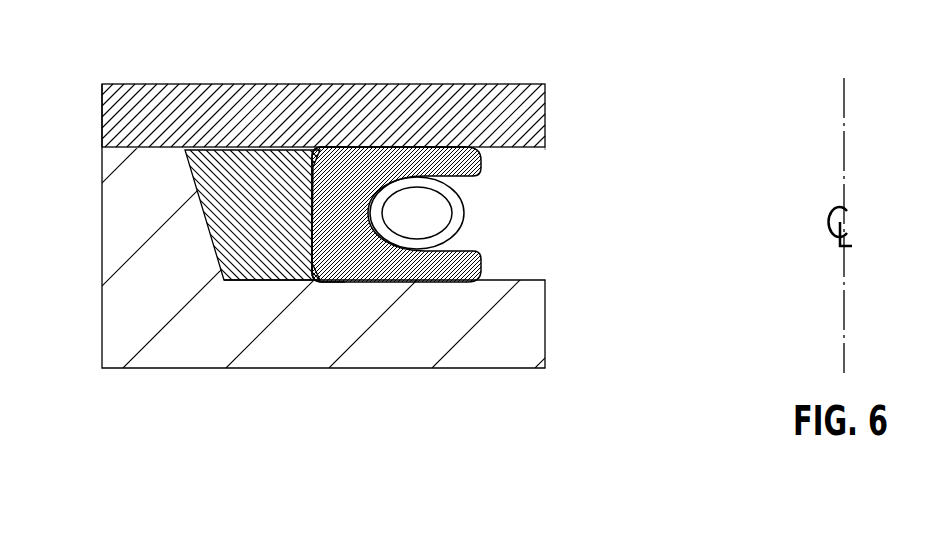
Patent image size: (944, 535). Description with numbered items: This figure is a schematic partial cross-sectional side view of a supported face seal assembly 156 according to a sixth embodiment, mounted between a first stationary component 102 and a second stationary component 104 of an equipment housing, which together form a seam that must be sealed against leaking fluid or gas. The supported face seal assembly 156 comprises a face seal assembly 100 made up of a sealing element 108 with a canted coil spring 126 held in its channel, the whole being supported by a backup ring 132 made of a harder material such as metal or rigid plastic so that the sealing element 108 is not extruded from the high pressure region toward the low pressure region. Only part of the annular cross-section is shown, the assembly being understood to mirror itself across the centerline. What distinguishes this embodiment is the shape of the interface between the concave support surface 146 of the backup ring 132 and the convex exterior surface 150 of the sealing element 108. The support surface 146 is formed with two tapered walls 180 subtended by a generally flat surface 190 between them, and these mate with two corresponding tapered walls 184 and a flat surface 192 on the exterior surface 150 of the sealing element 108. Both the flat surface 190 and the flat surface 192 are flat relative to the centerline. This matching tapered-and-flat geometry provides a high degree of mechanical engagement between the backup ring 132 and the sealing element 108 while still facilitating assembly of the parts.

The face seal assembly 100 is at (495, 262).
The first stationary component 102 is at (536, 118).
The second stationary component 104 is at (523, 342).
The sealing element 108 is at (453, 142).
The canted coil spring 126 is at (468, 220).
The backup ring 132 is at (220, 150).
The support surface 146 is at (342, 177).
The exterior surface 150 is at (312, 190).
The supported face seal assembly 156 is at (558, 188).
The tapered walls 180 is at (313, 172).
The tapered walls 184 is at (322, 185).
The flat surface 190 is at (310, 218).
The flat surface 192 is at (310, 227).